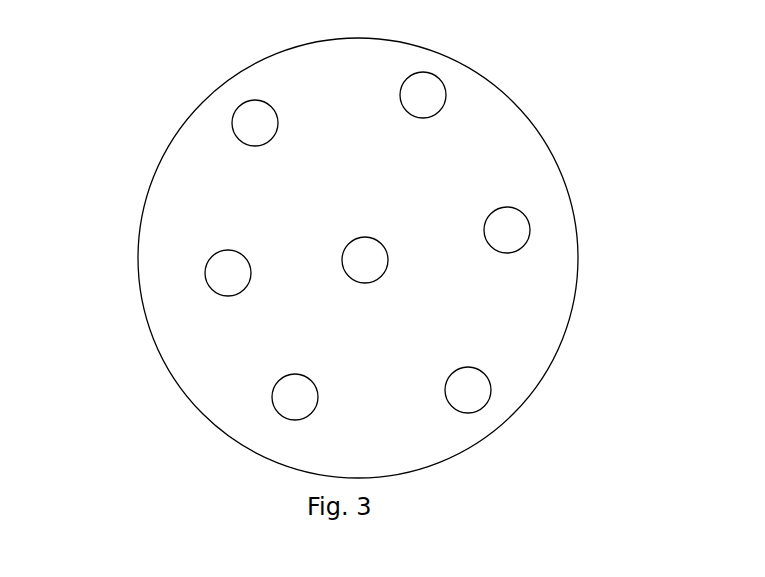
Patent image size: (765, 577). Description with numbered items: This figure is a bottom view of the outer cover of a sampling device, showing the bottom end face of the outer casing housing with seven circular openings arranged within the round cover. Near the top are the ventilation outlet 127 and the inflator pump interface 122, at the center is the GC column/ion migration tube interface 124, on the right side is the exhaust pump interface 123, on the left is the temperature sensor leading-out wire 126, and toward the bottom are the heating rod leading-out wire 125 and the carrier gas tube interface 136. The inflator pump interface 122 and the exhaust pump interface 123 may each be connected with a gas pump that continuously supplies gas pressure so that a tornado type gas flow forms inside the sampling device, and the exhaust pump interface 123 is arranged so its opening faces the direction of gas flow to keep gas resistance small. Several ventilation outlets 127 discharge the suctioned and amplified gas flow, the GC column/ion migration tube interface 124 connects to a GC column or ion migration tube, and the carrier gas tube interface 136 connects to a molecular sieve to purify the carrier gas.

The inflator pump interface 122 is at (537, 119).
The exhaust pump interface 123 is at (582, 262).
The GC column/ion migration tube interface 124 is at (511, 321).
The heating rod leading-out wire 125 is at (188, 423).
The temperature sensor leading-out wire 126 is at (151, 314).
The ventilation outlet 127 is at (165, 166).
The carrier gas tube interface 136 is at (562, 414).